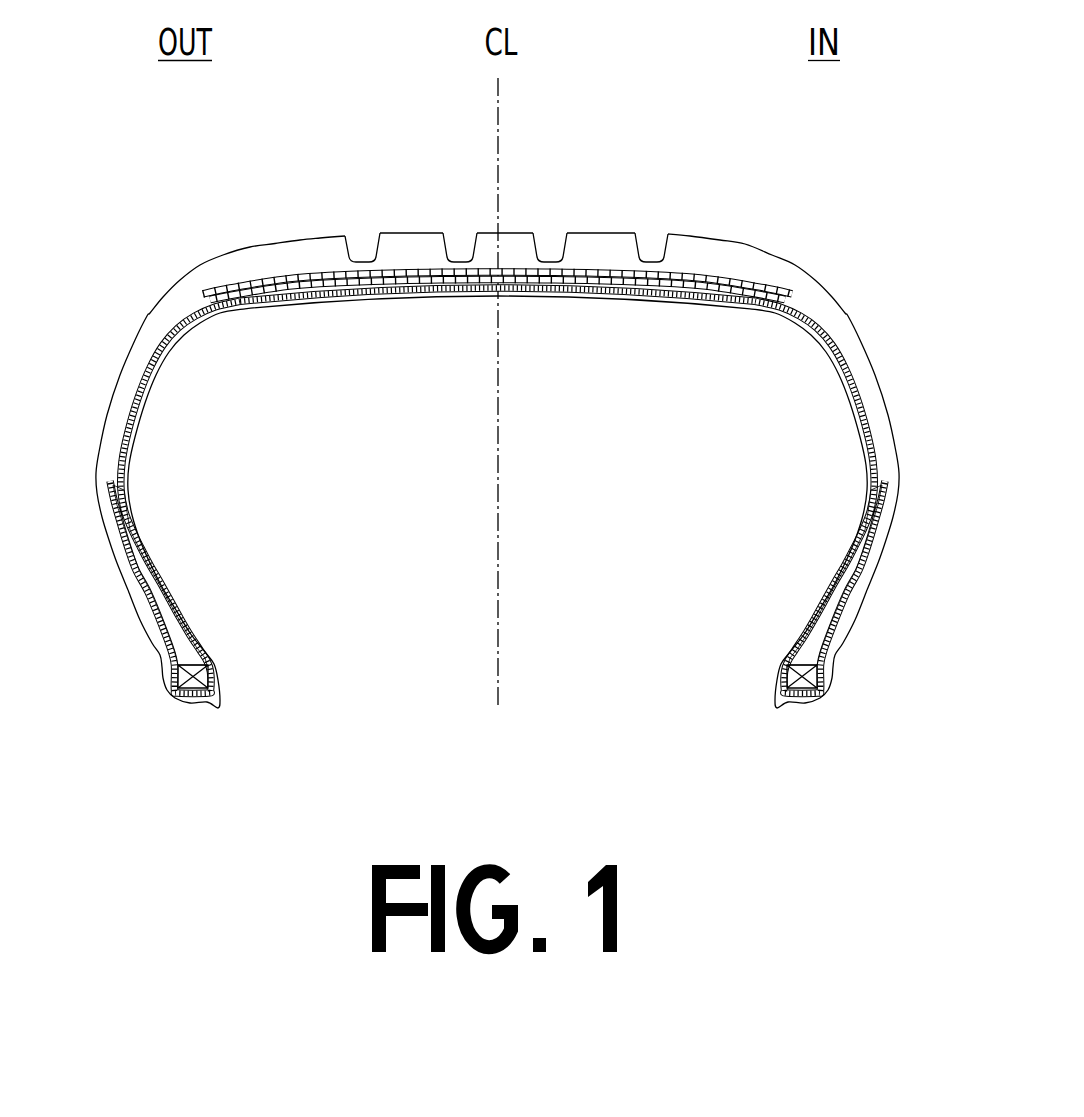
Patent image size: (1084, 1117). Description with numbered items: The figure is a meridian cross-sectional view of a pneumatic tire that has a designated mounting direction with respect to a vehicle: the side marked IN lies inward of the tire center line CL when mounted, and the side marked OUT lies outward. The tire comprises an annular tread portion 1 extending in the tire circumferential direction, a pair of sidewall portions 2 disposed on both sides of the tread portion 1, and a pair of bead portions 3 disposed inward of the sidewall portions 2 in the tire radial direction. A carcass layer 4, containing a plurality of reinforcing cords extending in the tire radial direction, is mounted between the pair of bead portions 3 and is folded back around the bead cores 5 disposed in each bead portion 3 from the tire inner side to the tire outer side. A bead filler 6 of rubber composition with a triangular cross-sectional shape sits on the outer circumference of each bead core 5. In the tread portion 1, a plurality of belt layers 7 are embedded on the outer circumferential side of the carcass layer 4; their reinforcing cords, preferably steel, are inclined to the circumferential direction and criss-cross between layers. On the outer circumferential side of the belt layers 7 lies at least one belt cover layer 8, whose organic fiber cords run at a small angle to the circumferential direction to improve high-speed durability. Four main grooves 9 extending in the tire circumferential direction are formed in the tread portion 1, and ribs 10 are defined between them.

The tread portion 1 is at (499, 383).
The sidewall portions 2 is at (98, 400).
The bead portions 3 is at (152, 663).
The carcass layer 4 is at (162, 350).
The bead cores 5 is at (212, 675).
The bead filler 6 is at (182, 632).
The belt layers 7 is at (663, 291).
The belt cover layer 8 is at (262, 276).
The main grooves 9 is at (372, 238).
The ribs 10 is at (303, 244).